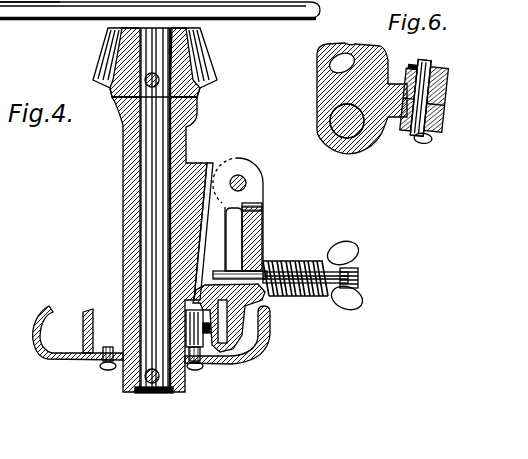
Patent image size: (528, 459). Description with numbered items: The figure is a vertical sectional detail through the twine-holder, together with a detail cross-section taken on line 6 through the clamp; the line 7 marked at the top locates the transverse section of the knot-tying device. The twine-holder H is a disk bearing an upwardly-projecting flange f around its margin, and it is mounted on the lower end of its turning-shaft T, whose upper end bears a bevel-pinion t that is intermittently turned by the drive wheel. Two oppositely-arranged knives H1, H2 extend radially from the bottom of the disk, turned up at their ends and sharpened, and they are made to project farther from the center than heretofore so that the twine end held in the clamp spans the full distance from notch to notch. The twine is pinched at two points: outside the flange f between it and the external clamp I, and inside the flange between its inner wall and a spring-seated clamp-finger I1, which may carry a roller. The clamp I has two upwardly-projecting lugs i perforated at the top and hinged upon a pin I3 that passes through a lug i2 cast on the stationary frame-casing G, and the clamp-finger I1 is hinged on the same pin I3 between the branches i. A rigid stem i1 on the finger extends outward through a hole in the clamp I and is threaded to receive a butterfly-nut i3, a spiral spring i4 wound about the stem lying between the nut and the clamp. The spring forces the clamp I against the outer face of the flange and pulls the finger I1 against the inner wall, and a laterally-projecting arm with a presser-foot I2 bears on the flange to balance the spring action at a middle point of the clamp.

In FIG. 4, the section line 7 is at (46, 20).
In FIG. 4, the bevel-pinion t is at (207, 62).
In FIG. 4, the stationary frame-casing G is at (125, 145).
In FIG. 6, the stationary frame-casing G is at (341, 62).
In FIG. 4, the turning-shaft T is at (162, 157).
In FIG. 6, the turning-shaft T is at (355, 136).
In FIG. 4, the section line 6 is at (205, 185).
In FIG. 4, the external clamp I is at (240, 330).
In FIG. 4, the upwardly-projecting lug i is at (263, 195).
In FIG. 6, the upwardly-projecting lug i is at (437, 70).
In FIG. 4, the lug i2 is at (225, 172).
In FIG. 6, the lug i2 is at (445, 90).
In FIG. 4, the pin I3 is at (240, 178).
In FIG. 6, the pin I3 is at (432, 143).
In FIG. 4, the clamp-finger I1 is at (210, 263).
In FIG. 6, the clamp-finger I1 is at (446, 104).
In FIG. 4, the presser-foot I2 is at (16, 223).
In FIG. 4, the spiral spring i4 is at (312, 262).
In FIG. 4, the butterfly-nut i3 is at (350, 252).
In FIG. 4, the stem i1 is at (358, 278).
In FIG. 4, the knife H2 is at (271, 327).
In FIG. 4, the knife H1 is at (63, 333).
In FIG. 4, the twine-holder H is at (90, 309).
In FIG. 4, the flange f is at (83, 326).